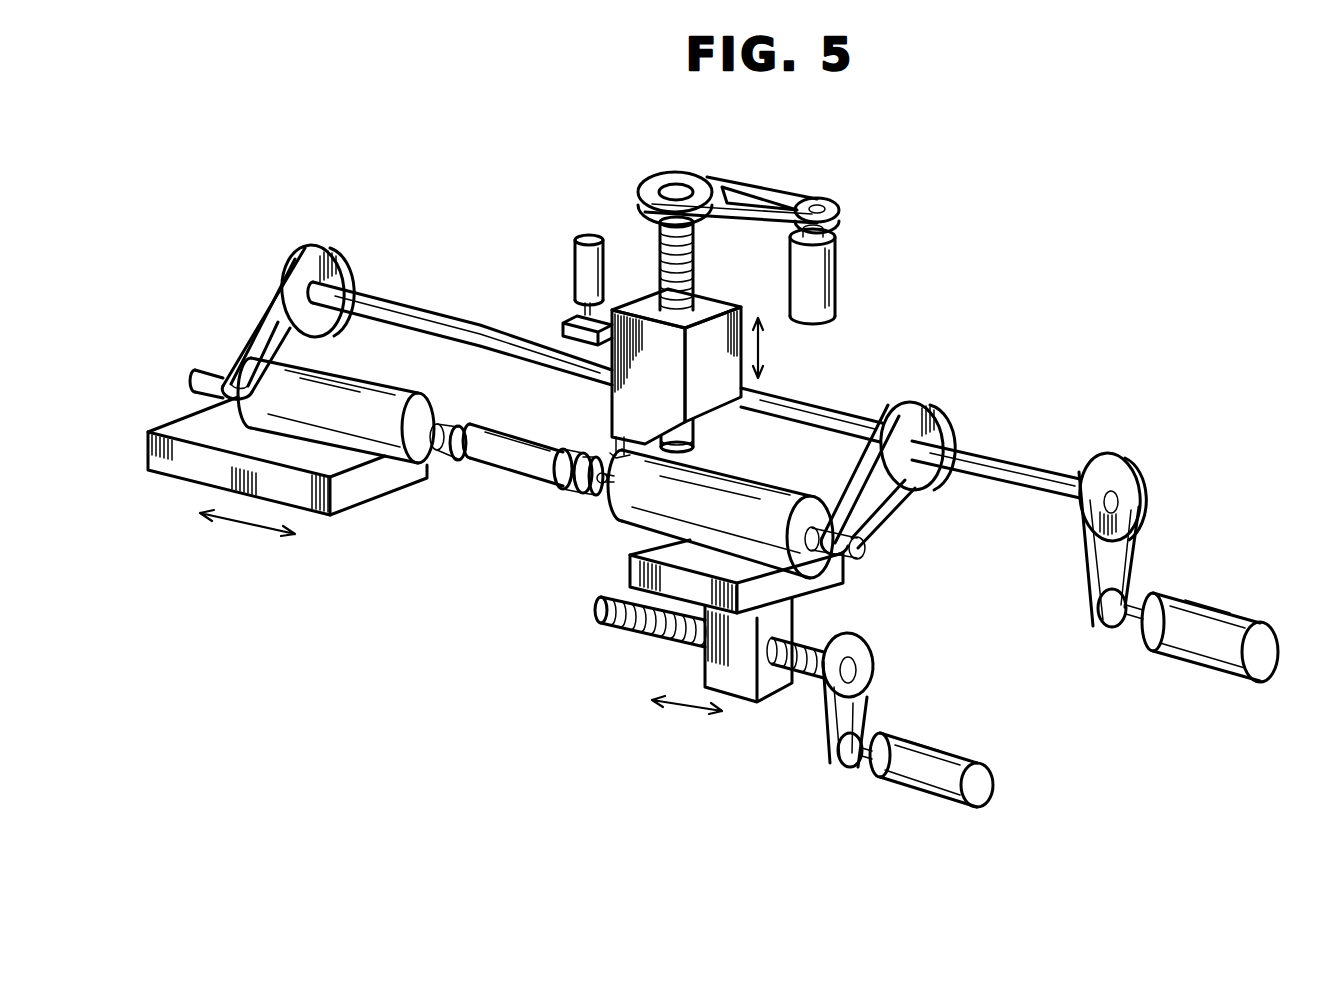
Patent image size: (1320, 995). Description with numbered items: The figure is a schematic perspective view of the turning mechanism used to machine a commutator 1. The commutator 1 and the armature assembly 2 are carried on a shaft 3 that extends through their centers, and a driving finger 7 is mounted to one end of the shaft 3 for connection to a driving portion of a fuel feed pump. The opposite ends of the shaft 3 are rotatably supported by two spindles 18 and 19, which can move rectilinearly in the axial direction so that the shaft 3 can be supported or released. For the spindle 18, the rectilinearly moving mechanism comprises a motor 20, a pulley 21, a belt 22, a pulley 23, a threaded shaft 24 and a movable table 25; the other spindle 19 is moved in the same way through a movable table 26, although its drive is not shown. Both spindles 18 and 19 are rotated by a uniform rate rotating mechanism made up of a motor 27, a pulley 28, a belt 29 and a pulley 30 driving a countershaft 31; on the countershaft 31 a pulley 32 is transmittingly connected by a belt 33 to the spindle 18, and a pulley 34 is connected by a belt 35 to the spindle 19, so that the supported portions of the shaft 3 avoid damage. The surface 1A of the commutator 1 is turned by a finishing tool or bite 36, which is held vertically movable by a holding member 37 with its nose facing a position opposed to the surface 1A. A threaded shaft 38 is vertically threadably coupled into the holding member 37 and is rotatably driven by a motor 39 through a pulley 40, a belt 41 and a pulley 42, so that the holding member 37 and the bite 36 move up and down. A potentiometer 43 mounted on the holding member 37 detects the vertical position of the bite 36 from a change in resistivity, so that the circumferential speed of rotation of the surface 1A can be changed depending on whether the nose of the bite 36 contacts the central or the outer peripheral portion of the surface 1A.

The commutator 1 is at (577, 492).
The surface of the commutator 1A is at (591, 500).
The armature assembly 2 is at (506, 478).
The shaft 3 is at (600, 490).
The driving finger 7 is at (447, 452).
The spindle 18 is at (662, 531).
The spindle 19 is at (374, 447).
The motor 20 is at (915, 792).
The pulley 21 is at (840, 760).
The belt 22 is at (822, 730).
The pulley 23 is at (875, 660).
The threaded shaft 24 is at (668, 640).
The movable table 25 is at (808, 583).
The movable table 26 is at (191, 482).
The motor 27 is at (1225, 603).
The pulley 28 is at (1114, 631).
The belt 29 is at (1141, 550).
The pulley 30 is at (1142, 479).
The countershaft 31 is at (985, 453).
The pulley 32 is at (918, 404).
The belt 33 is at (893, 508).
The pulley 34 is at (343, 271).
The belt 35 is at (250, 322).
The bite 36 is at (618, 440).
The holding member 37 is at (757, 387).
The threaded shaft 38 is at (698, 283).
The motor 39 is at (845, 288).
The pulley 40 is at (840, 208).
The belt 41 is at (758, 178).
The pulley 42 is at (685, 173).
The potentiometer 43 is at (588, 238).